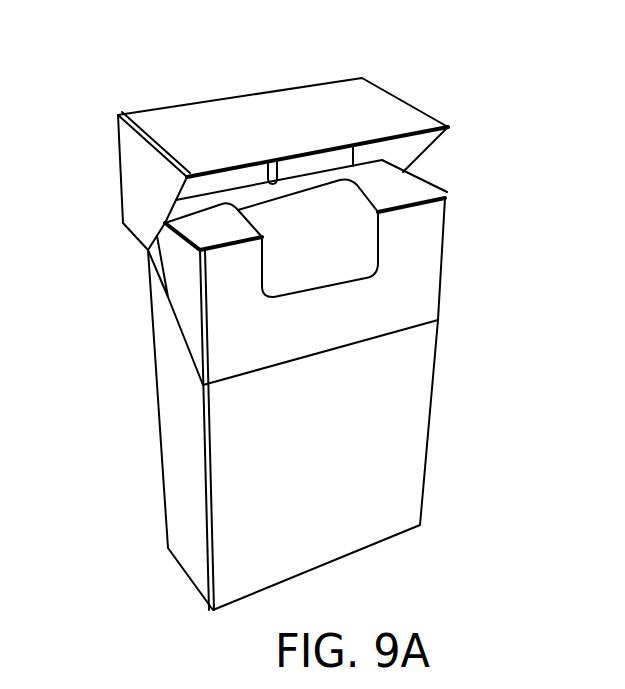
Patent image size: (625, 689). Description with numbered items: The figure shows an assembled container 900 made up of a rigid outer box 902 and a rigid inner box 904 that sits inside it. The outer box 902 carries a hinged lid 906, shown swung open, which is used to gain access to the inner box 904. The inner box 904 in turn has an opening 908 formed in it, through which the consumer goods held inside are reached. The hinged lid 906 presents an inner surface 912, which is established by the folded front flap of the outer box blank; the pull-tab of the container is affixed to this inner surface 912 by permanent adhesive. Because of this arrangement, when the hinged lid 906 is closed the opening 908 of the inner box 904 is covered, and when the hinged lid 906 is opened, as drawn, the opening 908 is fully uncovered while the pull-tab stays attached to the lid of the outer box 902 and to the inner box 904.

The assembled container 900 is at (112, 413).
The rigid outer box 902 is at (408, 418).
The rigid inner box 904 is at (423, 251).
The hinged lid 906 is at (372, 106).
The opening 908 is at (352, 228).
The inner surface 912 is at (265, 183).